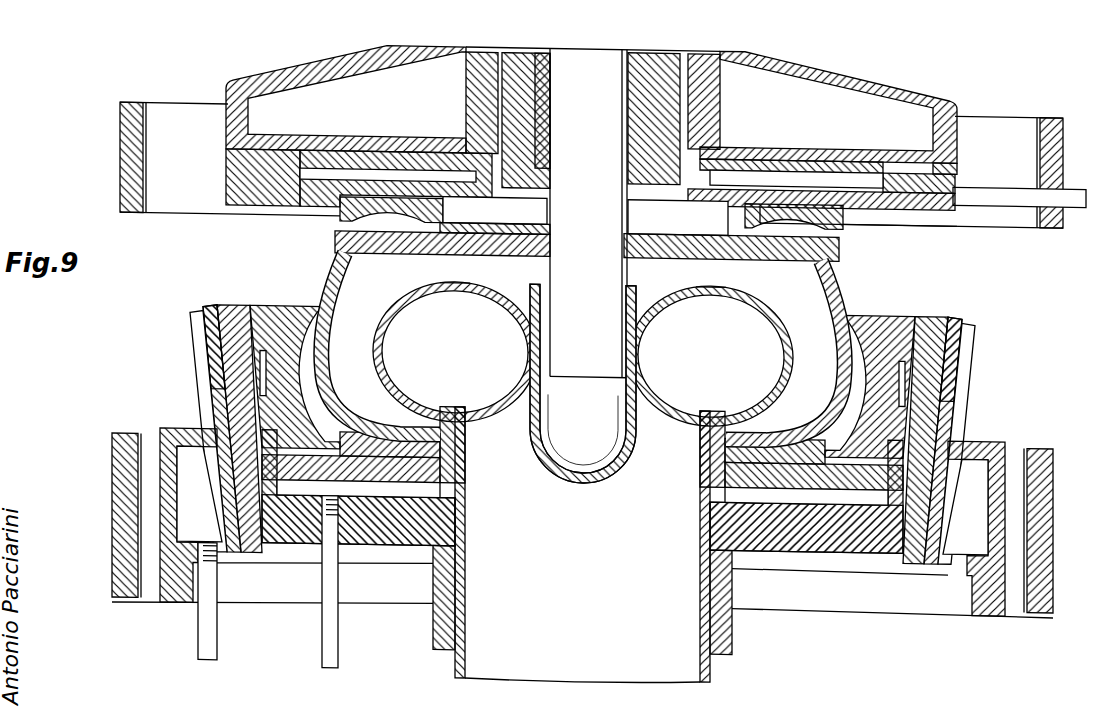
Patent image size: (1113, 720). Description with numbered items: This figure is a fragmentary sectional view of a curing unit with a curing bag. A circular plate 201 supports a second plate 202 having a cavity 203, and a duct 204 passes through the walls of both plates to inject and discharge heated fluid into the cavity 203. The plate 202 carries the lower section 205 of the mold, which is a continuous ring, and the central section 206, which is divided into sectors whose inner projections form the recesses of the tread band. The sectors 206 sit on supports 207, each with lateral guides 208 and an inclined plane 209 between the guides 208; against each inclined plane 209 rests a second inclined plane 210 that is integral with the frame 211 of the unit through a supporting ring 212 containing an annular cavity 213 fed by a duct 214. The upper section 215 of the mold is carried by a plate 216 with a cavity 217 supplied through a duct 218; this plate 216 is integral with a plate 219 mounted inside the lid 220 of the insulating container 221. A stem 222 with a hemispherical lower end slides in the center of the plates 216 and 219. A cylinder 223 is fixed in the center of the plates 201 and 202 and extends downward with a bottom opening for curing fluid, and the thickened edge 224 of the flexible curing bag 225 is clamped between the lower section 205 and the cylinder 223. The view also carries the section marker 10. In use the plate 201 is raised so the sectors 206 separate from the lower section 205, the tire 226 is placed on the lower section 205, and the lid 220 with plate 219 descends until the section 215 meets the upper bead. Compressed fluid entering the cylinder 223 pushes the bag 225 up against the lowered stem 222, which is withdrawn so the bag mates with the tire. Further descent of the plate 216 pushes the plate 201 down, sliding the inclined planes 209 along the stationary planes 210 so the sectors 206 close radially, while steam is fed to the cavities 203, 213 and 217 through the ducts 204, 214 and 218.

The section line 10 is at (110, 490).
The circular plate 201 is at (778, 536).
The second plate 202 is at (862, 508).
The cavity 203 is at (420, 491).
The duct 204 is at (328, 642).
The lower section of the mold 205 is at (390, 435).
The central section of the mold 206 is at (297, 406).
The supports 207 is at (245, 318).
The lateral guides 208 is at (210, 358).
The inclined plane 209 is at (223, 340).
The second inclined plane 210 is at (222, 400).
The frame 211 is at (177, 611).
The supporting ring 212 is at (160, 543).
The annular cavity 213 is at (183, 513).
The duct 214 is at (210, 645).
The upper section of the mold 215 is at (347, 221).
The plate 216 is at (240, 180).
The cavity 217 is at (390, 176).
The duct 218 is at (990, 176).
The plate 219 is at (957, 103).
The lid 220 is at (1053, 110).
The insulating container 221 is at (1053, 462).
The stem 222 is at (605, 66).
The cylinder 223 is at (705, 661).
The thickened edge 224 is at (453, 403).
The curing bag 225 is at (408, 297).
The tire 226 is at (333, 299).